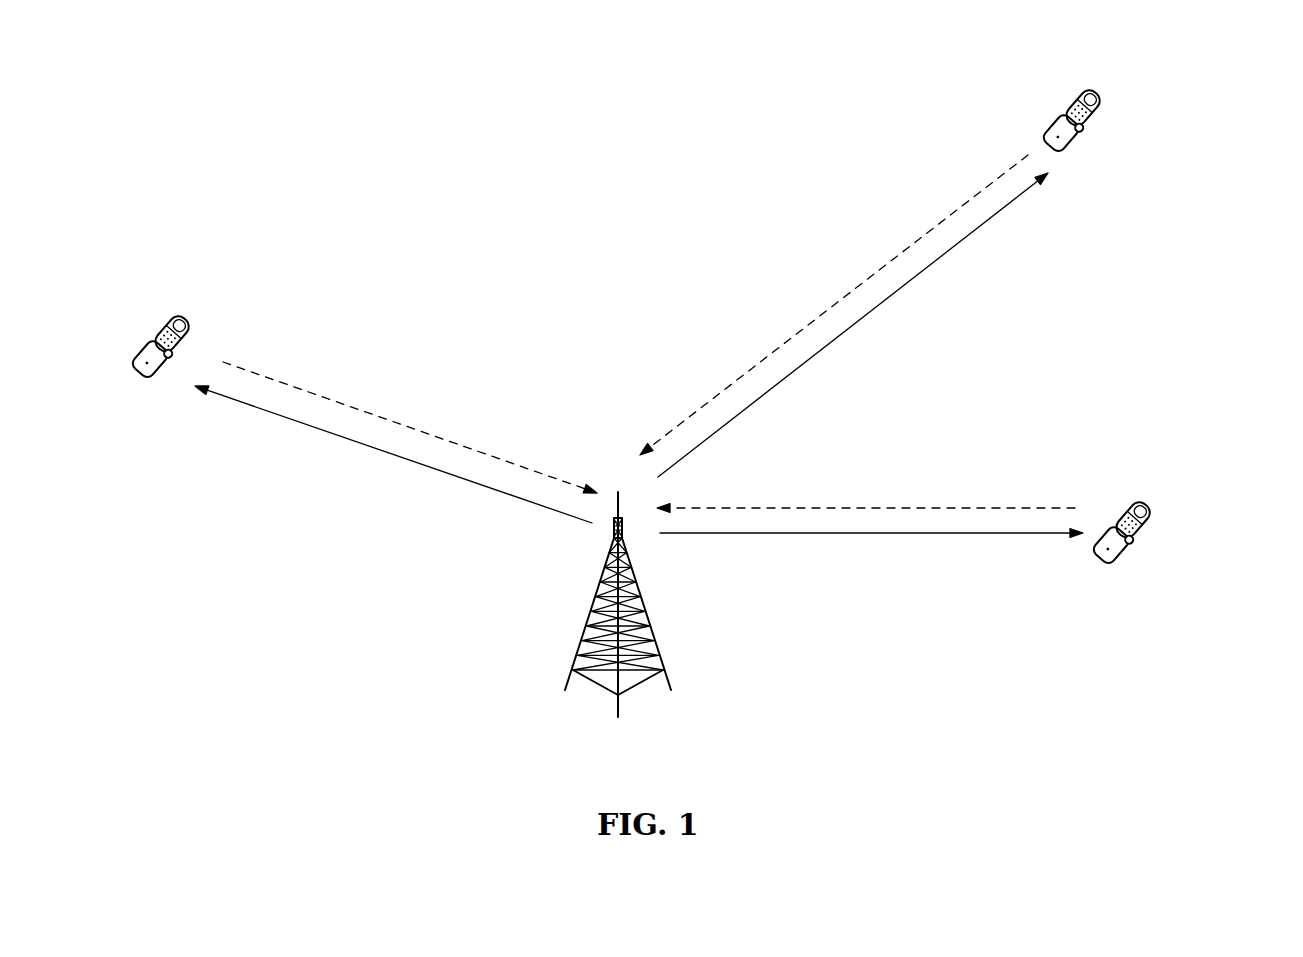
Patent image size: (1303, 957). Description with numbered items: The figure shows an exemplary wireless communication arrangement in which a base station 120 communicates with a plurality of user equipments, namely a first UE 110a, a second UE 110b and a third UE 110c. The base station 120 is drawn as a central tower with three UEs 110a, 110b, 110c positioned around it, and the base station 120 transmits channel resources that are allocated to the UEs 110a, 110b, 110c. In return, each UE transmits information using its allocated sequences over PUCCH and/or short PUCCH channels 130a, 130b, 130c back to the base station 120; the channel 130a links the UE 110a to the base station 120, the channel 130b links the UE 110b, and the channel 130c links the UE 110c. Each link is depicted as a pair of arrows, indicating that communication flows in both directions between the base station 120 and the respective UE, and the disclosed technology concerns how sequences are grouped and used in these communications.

The UE 110a is at (145, 323).
The UE 110b is at (1165, 537).
The UE 110c is at (1117, 124).
The base station 120 is at (688, 700).
The PUCCH and/or short PUCCH channel 130a is at (433, 417).
The PUCCH and/or short PUCCH channel 130b is at (882, 493).
The PUCCH and/or short PUCCH channel 130c is at (835, 293).